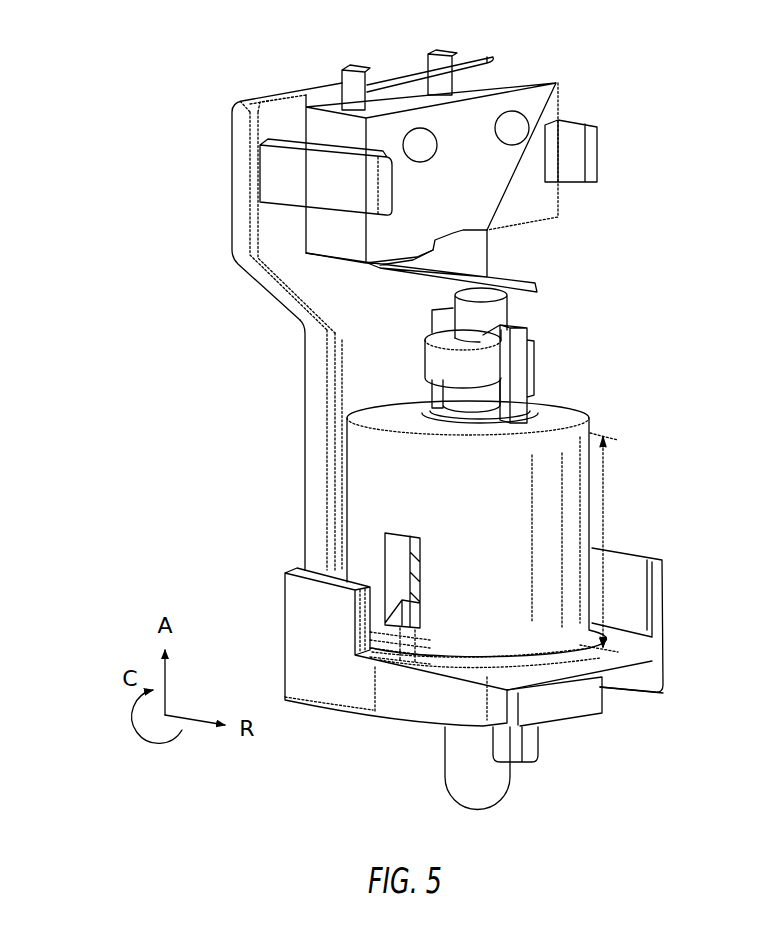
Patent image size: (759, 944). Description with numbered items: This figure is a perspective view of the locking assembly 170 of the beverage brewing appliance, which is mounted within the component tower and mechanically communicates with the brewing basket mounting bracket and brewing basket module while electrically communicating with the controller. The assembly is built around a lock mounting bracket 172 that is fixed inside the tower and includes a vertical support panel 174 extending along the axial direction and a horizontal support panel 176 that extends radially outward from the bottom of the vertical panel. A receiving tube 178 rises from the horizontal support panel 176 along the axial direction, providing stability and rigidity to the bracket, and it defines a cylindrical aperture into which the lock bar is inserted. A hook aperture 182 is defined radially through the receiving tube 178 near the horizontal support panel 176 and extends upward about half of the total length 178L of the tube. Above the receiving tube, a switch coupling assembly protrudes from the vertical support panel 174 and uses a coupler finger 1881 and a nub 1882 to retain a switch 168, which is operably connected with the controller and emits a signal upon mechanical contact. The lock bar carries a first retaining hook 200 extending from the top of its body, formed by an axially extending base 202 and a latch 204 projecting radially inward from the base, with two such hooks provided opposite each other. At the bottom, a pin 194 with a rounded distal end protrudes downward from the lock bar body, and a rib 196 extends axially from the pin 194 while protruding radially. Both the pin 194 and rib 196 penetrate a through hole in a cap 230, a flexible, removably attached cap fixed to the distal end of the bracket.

The switch 168 is at (350, 137).
The coupler finger 1881 is at (593, 132).
The nub 1882 is at (514, 120).
The locking assembly 170 is at (218, 393).
The lock mounting bracket 172 is at (243, 243).
The vertical support panel 174 is at (368, 365).
The horizontal support panel 176 is at (500, 673).
The receiving tube 178 is at (367, 460).
The total length of receiving tube 178L is at (605, 513).
The hook aperture 182 is at (380, 567).
The pin 194 is at (447, 787).
The rib 196 is at (542, 753).
The first retaining hook 200 is at (573, 287).
The base 202 is at (520, 383).
The latch 204 is at (497, 327).
The cap 230 is at (582, 698).